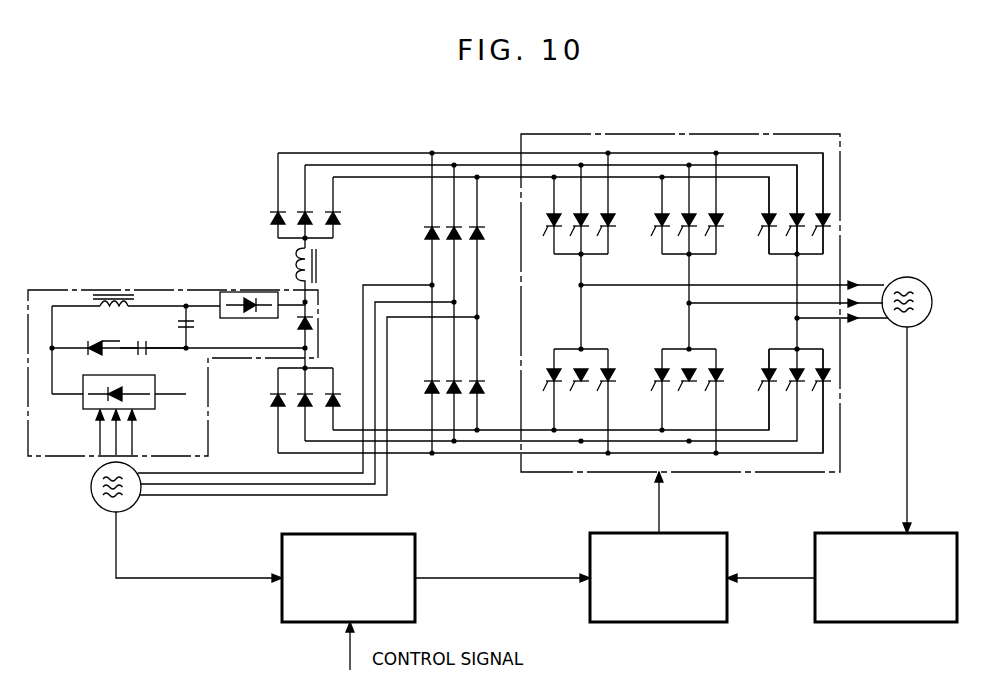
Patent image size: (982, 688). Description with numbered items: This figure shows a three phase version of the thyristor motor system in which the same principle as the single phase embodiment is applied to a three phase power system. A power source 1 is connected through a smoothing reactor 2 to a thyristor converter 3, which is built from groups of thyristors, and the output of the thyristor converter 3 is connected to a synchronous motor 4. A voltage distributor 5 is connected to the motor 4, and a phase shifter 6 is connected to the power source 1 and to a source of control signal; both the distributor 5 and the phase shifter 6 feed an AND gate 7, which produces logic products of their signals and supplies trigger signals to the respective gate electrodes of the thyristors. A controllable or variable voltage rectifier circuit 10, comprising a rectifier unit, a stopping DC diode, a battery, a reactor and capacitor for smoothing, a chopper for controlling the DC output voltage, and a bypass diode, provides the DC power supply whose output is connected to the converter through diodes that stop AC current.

The power source 1 is at (90, 494).
The smoothing reactor 2 is at (321, 266).
The thyristor converter 3 is at (642, 132).
The synchronous motor 4 is at (908, 278).
The voltage distributor 5 is at (869, 528).
The phase shifter 6 is at (325, 533).
The AND gate 7 is at (668, 532).
The controllable voltage rectifier circuit 10 is at (77, 289).